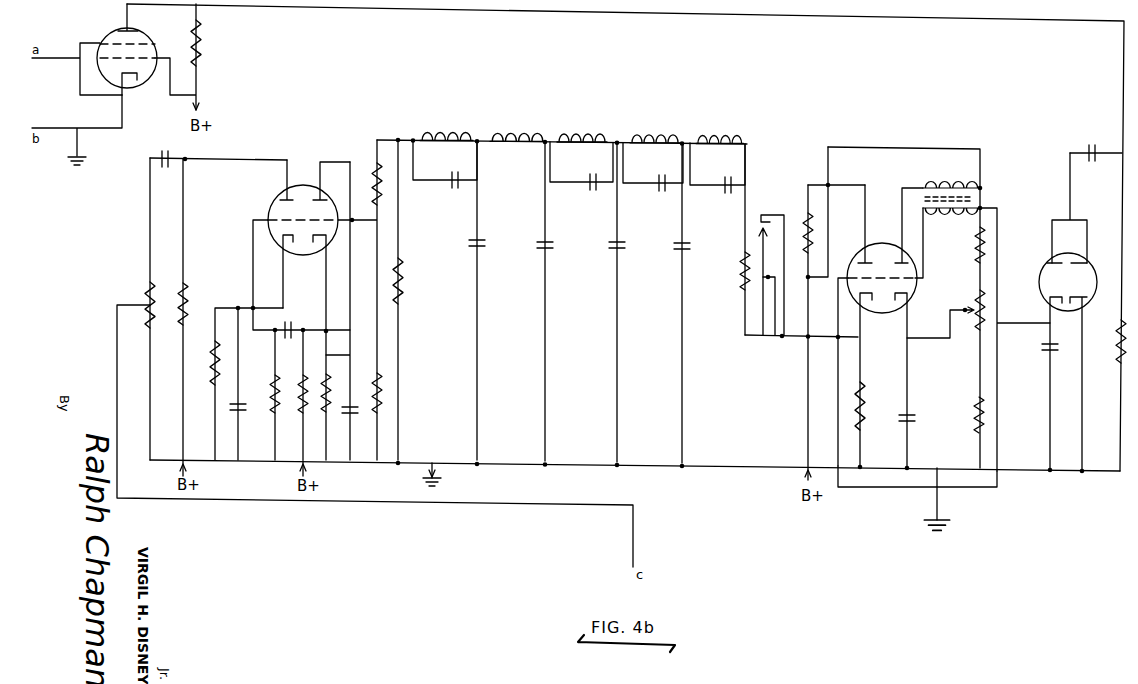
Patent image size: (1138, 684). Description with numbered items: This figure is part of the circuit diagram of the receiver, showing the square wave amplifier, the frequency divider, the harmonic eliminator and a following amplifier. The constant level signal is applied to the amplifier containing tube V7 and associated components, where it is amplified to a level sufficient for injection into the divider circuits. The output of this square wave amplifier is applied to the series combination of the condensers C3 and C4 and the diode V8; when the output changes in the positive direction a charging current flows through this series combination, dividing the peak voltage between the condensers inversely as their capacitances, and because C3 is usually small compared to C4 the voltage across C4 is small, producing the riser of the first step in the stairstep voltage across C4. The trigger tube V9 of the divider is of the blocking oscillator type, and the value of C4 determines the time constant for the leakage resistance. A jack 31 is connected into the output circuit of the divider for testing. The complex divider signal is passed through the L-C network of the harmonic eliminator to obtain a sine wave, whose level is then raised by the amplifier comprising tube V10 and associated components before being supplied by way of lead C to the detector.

The tube V7 is at (121, 33).
The tube V10 is at (293, 187).
The trigger tube V9 is at (883, 246).
The diode V8 is at (1047, 259).
The condenser C3 is at (1094, 150).
The condenser C4 is at (1043, 351).
The jack 31 is at (775, 212).